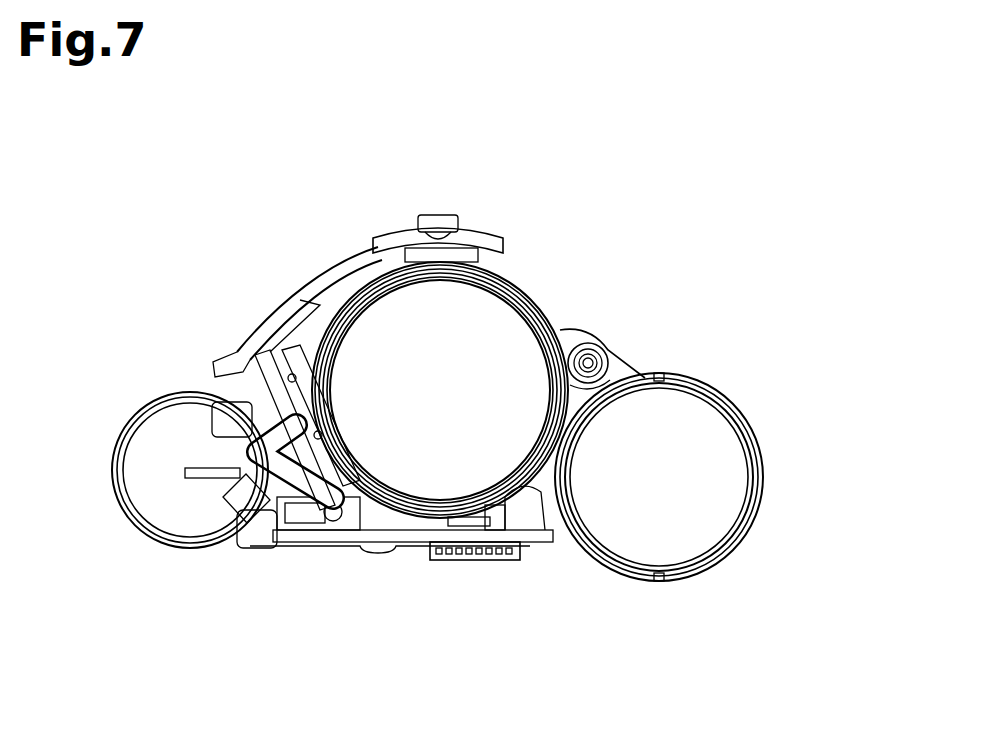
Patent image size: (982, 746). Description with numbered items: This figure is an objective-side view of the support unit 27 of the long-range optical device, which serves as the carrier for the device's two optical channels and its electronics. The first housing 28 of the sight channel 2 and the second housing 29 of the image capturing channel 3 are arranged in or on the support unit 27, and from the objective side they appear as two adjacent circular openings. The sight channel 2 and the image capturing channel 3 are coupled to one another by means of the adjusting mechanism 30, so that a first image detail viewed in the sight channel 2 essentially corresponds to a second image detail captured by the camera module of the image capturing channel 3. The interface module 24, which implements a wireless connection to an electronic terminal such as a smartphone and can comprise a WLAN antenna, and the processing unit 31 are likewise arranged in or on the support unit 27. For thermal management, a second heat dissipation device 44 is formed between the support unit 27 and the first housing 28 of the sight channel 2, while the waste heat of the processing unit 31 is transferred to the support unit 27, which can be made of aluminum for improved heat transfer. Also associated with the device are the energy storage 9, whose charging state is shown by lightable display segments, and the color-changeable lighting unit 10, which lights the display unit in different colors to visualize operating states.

The lighting unit 10 is at (497, 212).
The sight channel 2 is at (417, 430).
The image capturing channel 3 is at (687, 455).
The energy storage 9 is at (160, 492).
The interface module 24 is at (405, 222).
The support unit 27 is at (537, 282).
The first housing 28 is at (556, 306).
The second housing 29 is at (762, 447).
The adjusting mechanism 30 is at (627, 342).
The processing unit 31 is at (276, 367).
The second heat dissipation device 44 is at (496, 545).